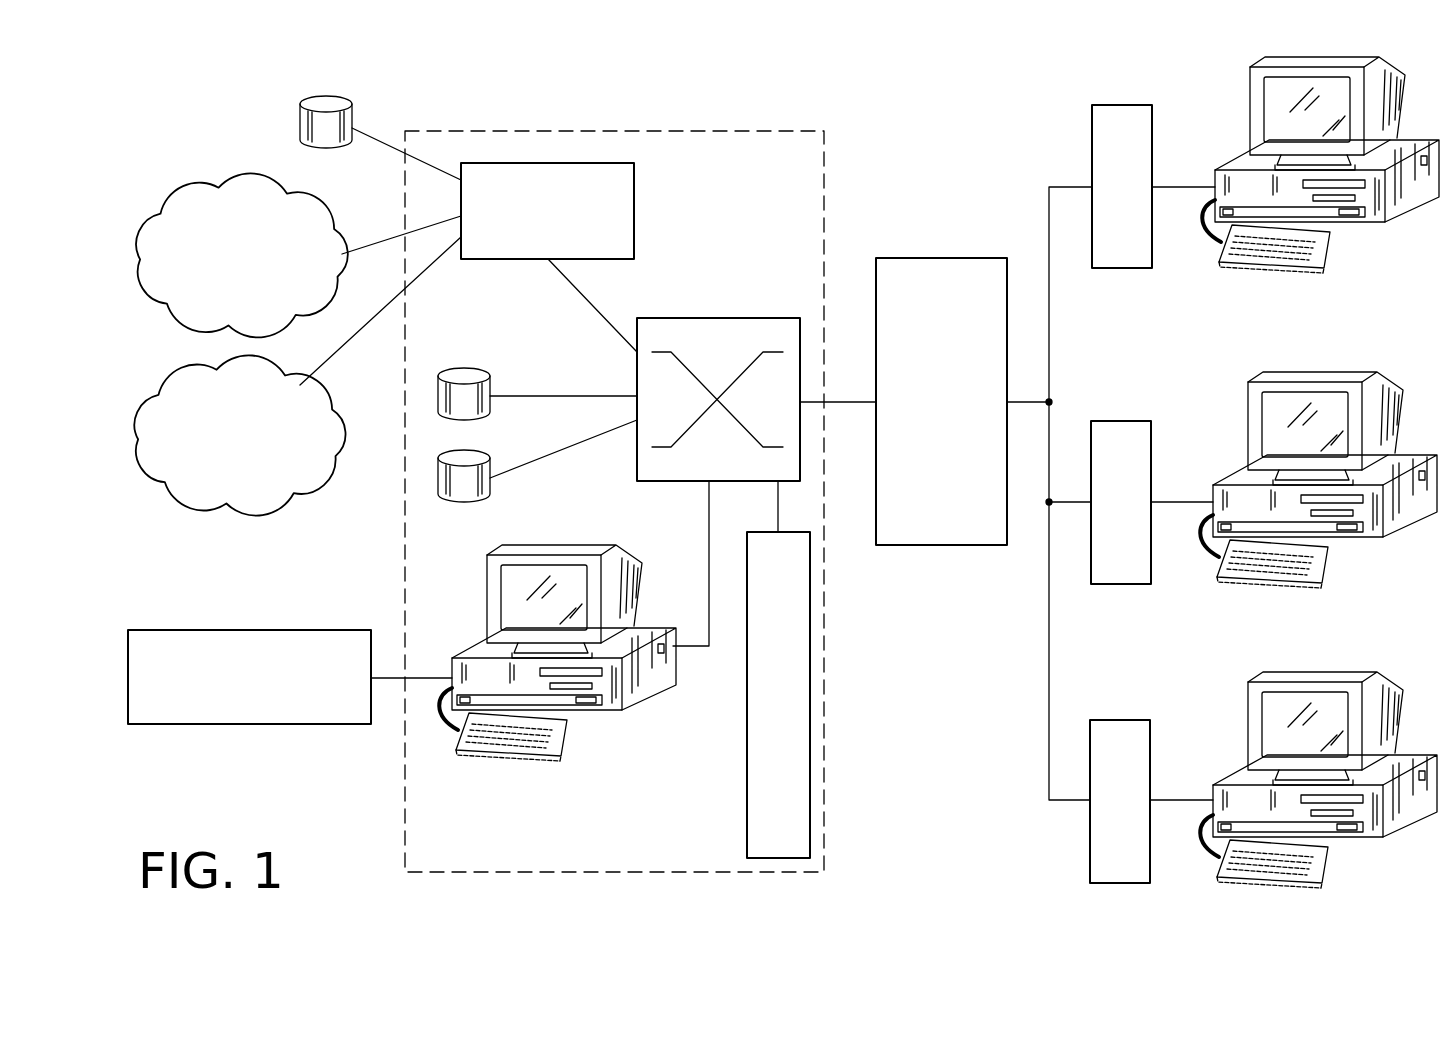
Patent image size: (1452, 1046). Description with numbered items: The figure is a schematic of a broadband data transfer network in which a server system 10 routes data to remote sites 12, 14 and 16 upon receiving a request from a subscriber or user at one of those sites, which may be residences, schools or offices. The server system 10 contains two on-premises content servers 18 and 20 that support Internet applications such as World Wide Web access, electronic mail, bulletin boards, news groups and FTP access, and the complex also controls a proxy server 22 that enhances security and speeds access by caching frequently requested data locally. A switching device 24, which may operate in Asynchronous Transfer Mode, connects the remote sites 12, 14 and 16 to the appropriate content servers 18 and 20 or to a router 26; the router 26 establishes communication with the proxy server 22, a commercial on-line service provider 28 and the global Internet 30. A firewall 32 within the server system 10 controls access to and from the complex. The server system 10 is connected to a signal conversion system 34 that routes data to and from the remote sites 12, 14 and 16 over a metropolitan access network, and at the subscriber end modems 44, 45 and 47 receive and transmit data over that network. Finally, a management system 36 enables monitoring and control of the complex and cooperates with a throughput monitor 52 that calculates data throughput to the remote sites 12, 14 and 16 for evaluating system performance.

The server system 10 is at (405, 795).
The remote site 12 is at (1405, 195).
The remote site 14 is at (1407, 510).
The remote site 16 is at (1407, 810).
The content server 18 is at (478, 376).
The content server 20 is at (478, 458).
The proxy server 22 is at (327, 99).
The switching device 24 is at (763, 319).
The router 26 is at (636, 185).
The commercial on-line service provider 28 is at (300, 490).
The global Internet 30 is at (183, 203).
The firewall 32 is at (747, 841).
The signal conversion system 34 is at (977, 546).
The management system 36 is at (648, 690).
The modem 44 is at (1153, 120).
The modem 45 is at (1152, 437).
The modem 47 is at (1151, 737).
The throughput monitor 52 is at (314, 724).